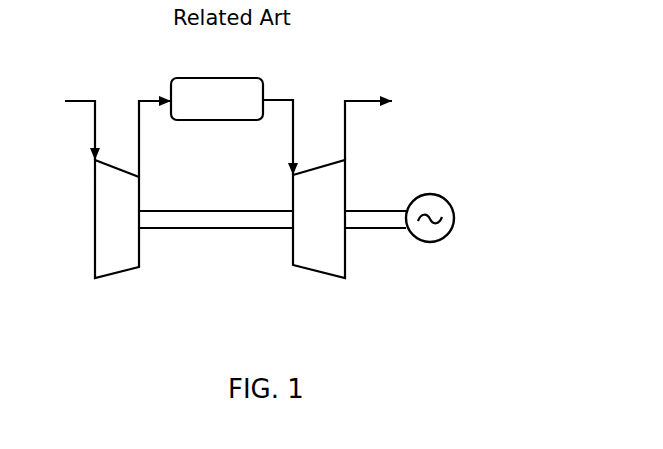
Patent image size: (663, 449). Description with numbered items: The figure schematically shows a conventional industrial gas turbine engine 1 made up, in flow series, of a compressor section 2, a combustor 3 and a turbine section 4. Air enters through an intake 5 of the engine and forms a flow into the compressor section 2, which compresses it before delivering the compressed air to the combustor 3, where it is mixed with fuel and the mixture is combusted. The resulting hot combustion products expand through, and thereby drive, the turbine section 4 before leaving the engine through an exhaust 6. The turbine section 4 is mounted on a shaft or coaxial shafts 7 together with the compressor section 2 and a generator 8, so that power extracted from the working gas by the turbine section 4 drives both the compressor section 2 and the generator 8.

The industrial gas turbine engine 1 is at (472, 47).
The compressor section 2 is at (124, 234).
The combustor 3 is at (221, 112).
The turbine section 4 is at (326, 234).
The intake 5 is at (78, 100).
The exhaust 6 is at (363, 100).
The shaft or coaxial shafts 7 is at (187, 230).
The generator 8 is at (459, 177).